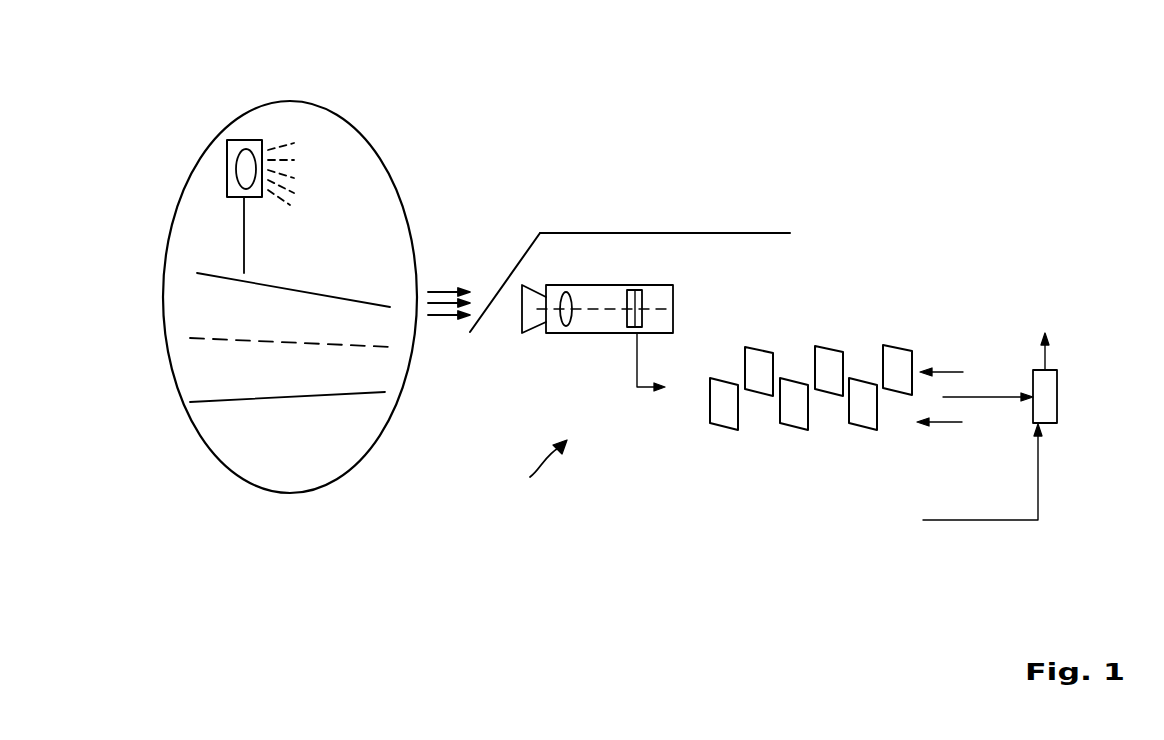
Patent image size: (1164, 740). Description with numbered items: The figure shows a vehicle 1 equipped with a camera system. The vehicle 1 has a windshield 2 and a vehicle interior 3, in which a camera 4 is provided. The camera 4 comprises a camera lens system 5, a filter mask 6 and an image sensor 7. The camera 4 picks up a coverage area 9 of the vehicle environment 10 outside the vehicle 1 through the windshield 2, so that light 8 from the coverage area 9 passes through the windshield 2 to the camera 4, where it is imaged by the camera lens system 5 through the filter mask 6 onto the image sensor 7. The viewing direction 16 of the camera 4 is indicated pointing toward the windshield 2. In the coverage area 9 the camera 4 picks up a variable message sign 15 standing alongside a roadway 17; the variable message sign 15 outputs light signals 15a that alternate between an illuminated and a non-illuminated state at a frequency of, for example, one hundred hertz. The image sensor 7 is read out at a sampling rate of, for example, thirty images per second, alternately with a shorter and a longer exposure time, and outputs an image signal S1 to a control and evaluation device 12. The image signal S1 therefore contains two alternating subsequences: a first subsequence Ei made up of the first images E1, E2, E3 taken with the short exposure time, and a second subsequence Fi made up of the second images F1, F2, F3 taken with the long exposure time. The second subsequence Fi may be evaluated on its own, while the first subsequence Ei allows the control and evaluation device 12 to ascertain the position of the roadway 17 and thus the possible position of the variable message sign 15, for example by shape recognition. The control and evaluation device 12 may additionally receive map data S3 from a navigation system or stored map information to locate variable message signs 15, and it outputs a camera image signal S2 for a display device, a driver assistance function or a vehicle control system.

The vehicle 1 is at (754, 233).
The windshield 2 is at (524, 250).
The vehicle interior 3 is at (588, 248).
The camera 4 is at (600, 333).
The camera lens system 5 is at (567, 333).
The filter mask 6 is at (630, 333).
The image sensor 7 is at (637, 292).
The light 8 is at (442, 316).
The coverage area 9 is at (398, 192).
The vehicle environment 10 is at (180, 253).
The control and evaluation device 12 is at (1057, 398).
The variable message sign 15 is at (232, 140).
The light signals 15a is at (285, 143).
The viewing direction 16 is at (537, 476).
The roadway 17 is at (305, 373).
The first image E1 is at (758, 347).
The first image E2 is at (827, 346).
The first image E3 is at (897, 345).
The second image F1 is at (723, 426).
The second image F2 is at (793, 426).
The second image F3 is at (865, 428).
The first subsequence Ei is at (958, 371).
The second subsequence Fi is at (957, 421).
The image signal S1 is at (643, 388).
The camera image signal S2 is at (1047, 355).
The map data S3 is at (980, 520).